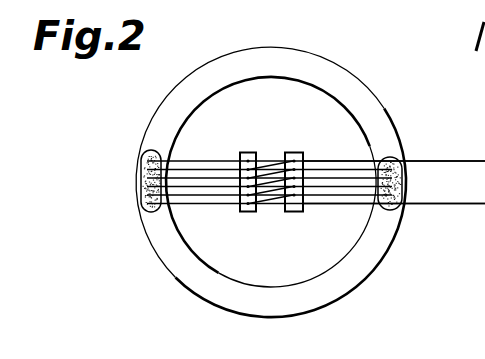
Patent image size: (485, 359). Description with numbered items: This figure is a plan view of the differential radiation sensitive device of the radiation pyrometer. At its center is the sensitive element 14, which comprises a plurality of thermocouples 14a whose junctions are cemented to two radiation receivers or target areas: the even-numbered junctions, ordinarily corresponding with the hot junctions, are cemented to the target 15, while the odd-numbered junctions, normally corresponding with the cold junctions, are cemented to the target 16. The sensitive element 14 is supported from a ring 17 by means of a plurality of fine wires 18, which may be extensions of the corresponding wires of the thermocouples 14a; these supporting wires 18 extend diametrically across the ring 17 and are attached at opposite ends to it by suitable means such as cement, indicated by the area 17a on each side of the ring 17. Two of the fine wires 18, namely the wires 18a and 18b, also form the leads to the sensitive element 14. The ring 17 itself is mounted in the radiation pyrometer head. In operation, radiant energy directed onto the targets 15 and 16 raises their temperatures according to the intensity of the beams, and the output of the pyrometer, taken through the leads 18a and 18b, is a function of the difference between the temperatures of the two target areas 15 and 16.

The sensitive element 14 is at (282, 250).
The thermocouples 14a is at (261, 167).
The target area 15 is at (243, 152).
The target area 16 is at (298, 153).
The ring 17 is at (243, 60).
The cement area 17a is at (143, 182).
The fine wires 18 is at (362, 167).
The lead wire 18a is at (348, 202).
The lead wire 18b is at (343, 161).